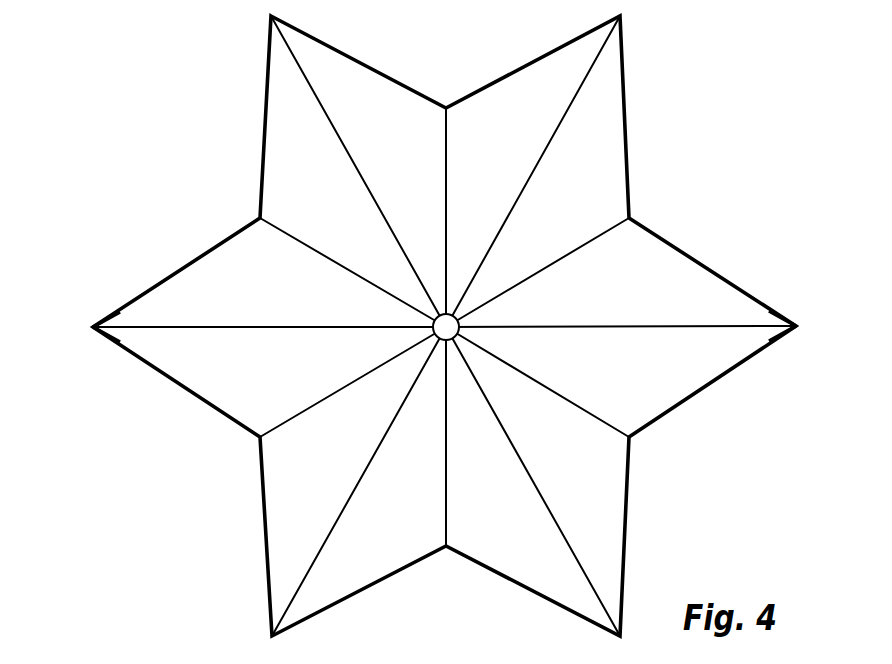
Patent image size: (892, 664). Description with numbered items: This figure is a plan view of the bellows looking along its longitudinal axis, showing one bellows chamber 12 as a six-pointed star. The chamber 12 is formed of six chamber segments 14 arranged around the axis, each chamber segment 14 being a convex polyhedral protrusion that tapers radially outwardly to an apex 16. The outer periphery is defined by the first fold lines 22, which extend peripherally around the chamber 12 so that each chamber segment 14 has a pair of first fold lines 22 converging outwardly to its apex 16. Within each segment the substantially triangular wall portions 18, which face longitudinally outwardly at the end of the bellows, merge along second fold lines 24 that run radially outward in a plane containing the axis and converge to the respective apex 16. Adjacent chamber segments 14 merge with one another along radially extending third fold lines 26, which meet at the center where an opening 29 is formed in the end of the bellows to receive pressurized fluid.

The bellows chamber 12 is at (446, 326).
The chamber segment 14 is at (444, 326).
The apex 16 is at (795, 322).
The triangular wall portion 18 is at (444, 326).
The first fold line 22 is at (262, 97).
The second fold line 24 is at (355, 173).
The third fold line 26 is at (446, 183).
The opening 29 is at (450, 328).